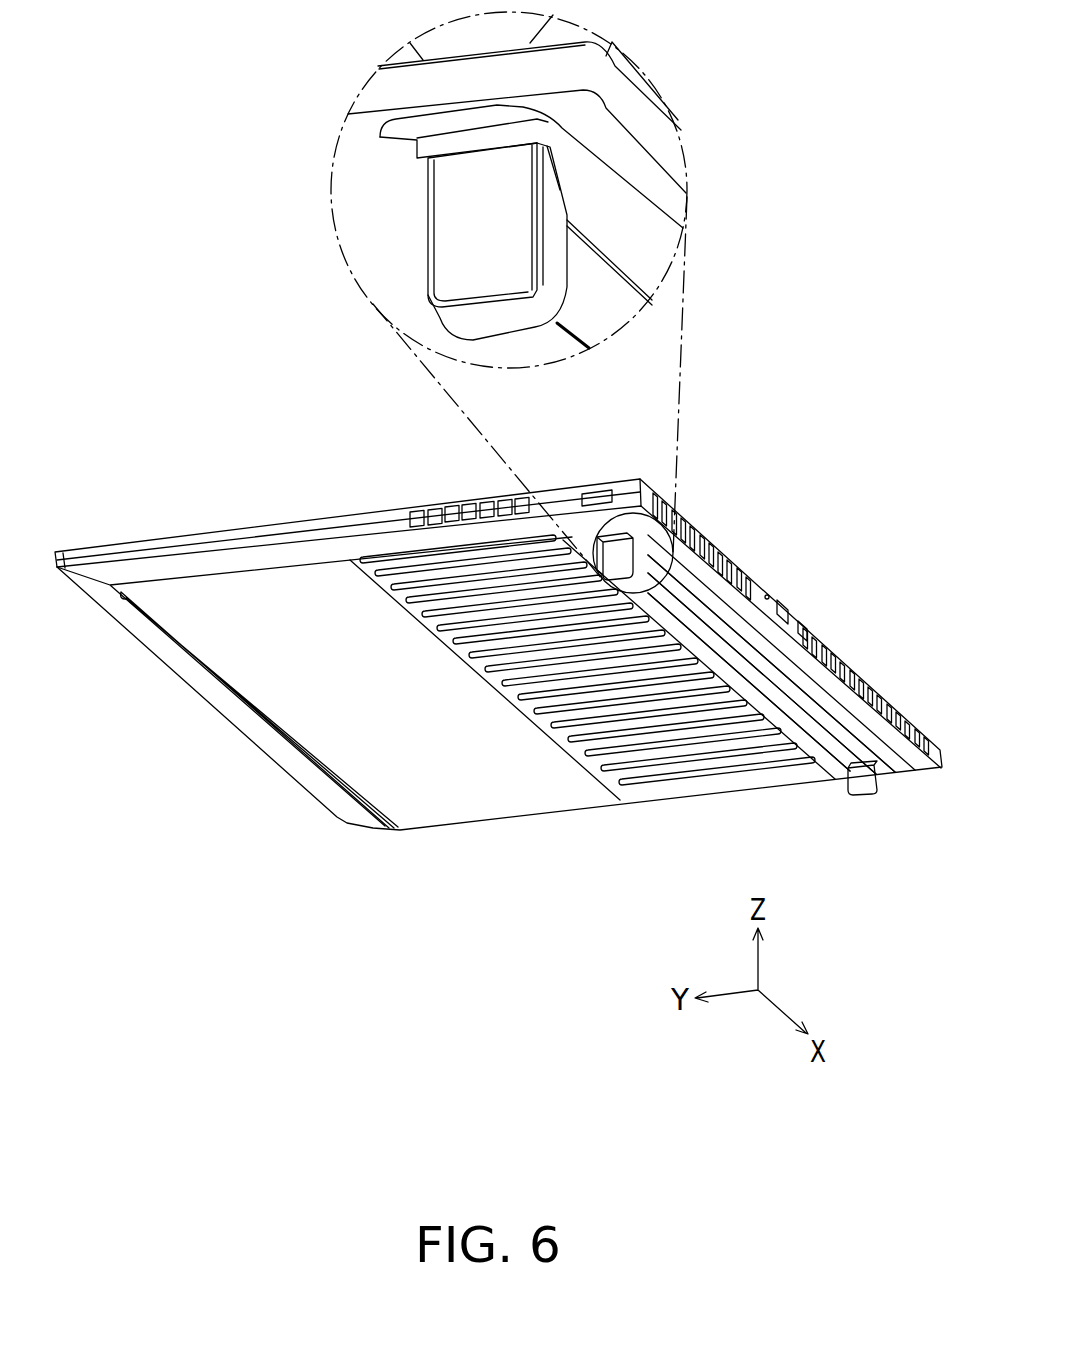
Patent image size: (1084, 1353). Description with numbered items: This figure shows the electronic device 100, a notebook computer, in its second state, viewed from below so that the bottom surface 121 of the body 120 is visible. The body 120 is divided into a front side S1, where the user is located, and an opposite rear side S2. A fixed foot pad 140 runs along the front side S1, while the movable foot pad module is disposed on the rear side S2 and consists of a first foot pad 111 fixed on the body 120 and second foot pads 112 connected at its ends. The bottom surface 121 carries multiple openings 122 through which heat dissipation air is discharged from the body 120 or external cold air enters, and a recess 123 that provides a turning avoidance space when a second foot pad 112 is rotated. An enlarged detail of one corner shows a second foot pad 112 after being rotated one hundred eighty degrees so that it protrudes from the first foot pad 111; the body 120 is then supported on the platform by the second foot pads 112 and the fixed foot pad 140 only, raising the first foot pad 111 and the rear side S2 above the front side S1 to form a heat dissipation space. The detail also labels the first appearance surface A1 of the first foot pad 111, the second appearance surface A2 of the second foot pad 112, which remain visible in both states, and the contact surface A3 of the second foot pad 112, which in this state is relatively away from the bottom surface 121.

The electronic device 100 is at (149, 1080).
The first foot pad 111 is at (750, 670).
The second foot pad 112 is at (668, 552).
The body 120 is at (95, 549).
The bottom surface 121 is at (646, 806).
The openings 122 is at (396, 591).
The recess 123 is at (424, 128).
The fixed foot pad 140 is at (260, 716).
The front side S1 is at (149, 714).
The rear side S2 is at (886, 608).
The first appearance surface A1 is at (615, 323).
The second appearance surface A2 is at (562, 238).
The contact surface A3 is at (474, 336).